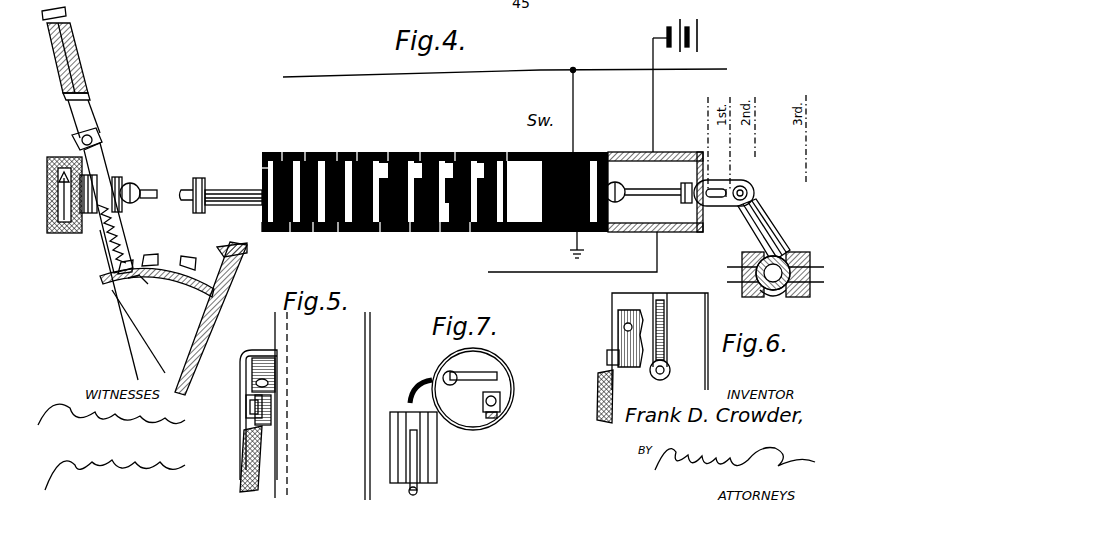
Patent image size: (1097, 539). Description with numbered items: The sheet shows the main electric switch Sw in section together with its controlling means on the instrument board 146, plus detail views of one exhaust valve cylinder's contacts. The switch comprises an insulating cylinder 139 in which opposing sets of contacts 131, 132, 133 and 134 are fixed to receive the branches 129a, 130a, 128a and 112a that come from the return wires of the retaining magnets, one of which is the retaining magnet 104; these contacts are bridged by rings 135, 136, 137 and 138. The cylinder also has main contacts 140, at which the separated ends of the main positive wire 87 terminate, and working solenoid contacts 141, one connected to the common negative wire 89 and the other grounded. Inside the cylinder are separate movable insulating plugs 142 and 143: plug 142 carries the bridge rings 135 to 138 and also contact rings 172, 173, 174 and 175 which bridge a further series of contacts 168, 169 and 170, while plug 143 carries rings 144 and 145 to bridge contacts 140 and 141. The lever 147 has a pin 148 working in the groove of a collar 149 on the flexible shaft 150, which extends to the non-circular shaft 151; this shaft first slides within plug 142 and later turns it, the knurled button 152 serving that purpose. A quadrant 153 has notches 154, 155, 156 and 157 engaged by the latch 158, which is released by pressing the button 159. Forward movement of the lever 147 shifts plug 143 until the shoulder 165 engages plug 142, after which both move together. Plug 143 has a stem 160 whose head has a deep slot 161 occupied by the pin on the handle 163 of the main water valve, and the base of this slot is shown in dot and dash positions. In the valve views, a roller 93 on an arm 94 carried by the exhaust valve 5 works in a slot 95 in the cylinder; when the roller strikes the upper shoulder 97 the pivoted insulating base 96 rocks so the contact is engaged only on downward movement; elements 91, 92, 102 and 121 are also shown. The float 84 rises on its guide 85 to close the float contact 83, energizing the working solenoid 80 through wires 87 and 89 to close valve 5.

In FIG. 5, the exhaust valve 5 is at (323, 348).
In FIG. 7, the working solenoid 80 is at (447, 372).
In FIG. 7, the float contact 83 is at (500, 378).
In FIG. 7, the float 84 is at (437, 455).
In FIG. 7, the guide 85 is at (418, 491).
In FIG. 4, the main positive wire 87 is at (655, 100).
In FIG. 4, the common negative wire 89 is at (520, 72).
In FIG. 5, the flexible tail 91 is at (250, 456).
In FIG. 5, the block 92 is at (243, 406).
In FIG. 6, the block 92 is at (651, 376).
In FIG. 5, the roller 93 is at (257, 424).
In FIG. 6, the roller 93 is at (672, 370).
In FIG. 5, the arm 94 is at (250, 382).
In FIG. 6, the arm 94 is at (668, 327).
In FIG. 5, the slot 95 is at (283, 343).
In FIG. 6, the slot 95 is at (665, 303).
In FIG. 6, the insulating base 96 is at (622, 329).
In FIG. 6, the upper shoulder 97 is at (625, 310).
In FIG. 4, the link 102 is at (756, 193).
In FIG. 4, the retaining magnet 104 is at (786, 260).
In FIG. 4, the branch 112a is at (494, 152).
In FIG. 4, the contact segment 121 is at (356, 152).
In FIG. 4, the branch 128a is at (456, 152).
In FIG. 4, the branch 129a is at (390, 152).
In FIG. 4, the branch 130a is at (422, 152).
In FIG. 4, the switch contact 131 is at (389, 150).
In FIG. 4, the switch contact 132 is at (419, 150).
In FIG. 4, the switch contact 133 is at (449, 150).
In FIG. 4, the switch contact 134 is at (507, 152).
In FIG. 4, the bridge ring 135 is at (382, 233).
In FIG. 4, the bridge ring 136 is at (412, 233).
In FIG. 4, the bridge ring 137 is at (442, 233).
In FIG. 4, the bridge ring 138 is at (472, 233).
In FIG. 4, the insulating cylinder 139 is at (266, 156).
In FIG. 4, the main contacts 140 is at (653, 152).
In FIG. 4, the working solenoid contacts 141 is at (573, 232).
In FIG. 4, the contact plug 142 is at (266, 170).
In FIG. 4, the contact plug 143 is at (598, 152).
In FIG. 4, the ring 144 is at (617, 153).
In FIG. 4, the ring 145 is at (522, 215).
In FIG. 4, the instrument board 146 is at (197, 343).
In FIG. 4, the lever 147 is at (88, 60).
In FIG. 4, the pin 148 is at (105, 168).
In FIG. 4, the collar 149 is at (123, 180).
In FIG. 4, the flexible shaft 150 is at (150, 186).
In FIG. 4, the non-circular shaft 151 is at (241, 190).
In FIG. 4, the knurled button 152 is at (58, 234).
In FIG. 4, the quadrant 153 is at (106, 281).
In FIG. 4, the notch 154 is at (125, 278).
In FIG. 4, the notch 155 is at (140, 278).
In FIG. 4, the notch 156 is at (127, 298).
In FIG. 4, the notch 157 is at (168, 283).
In FIG. 4, the latch 158 is at (112, 265).
In FIG. 4, the button 159 is at (67, 13).
In FIG. 4, the stem 160 is at (647, 189).
In FIG. 4, the slot 161 is at (726, 200).
In FIG. 4, the handle 163 is at (772, 238).
In FIG. 4, the shoulder 165 is at (200, 177).
In FIG. 4, the contact 168 is at (282, 152).
In FIG. 4, the contact 169 is at (305, 152).
In FIG. 4, the contact 170 is at (336, 152).
In FIG. 4, the contact ring 172 is at (262, 234).
In FIG. 4, the contact ring 173 is at (290, 233).
In FIG. 4, the contact ring 174 is at (316, 233).
In FIG. 4, the contact ring 175 is at (340, 233).